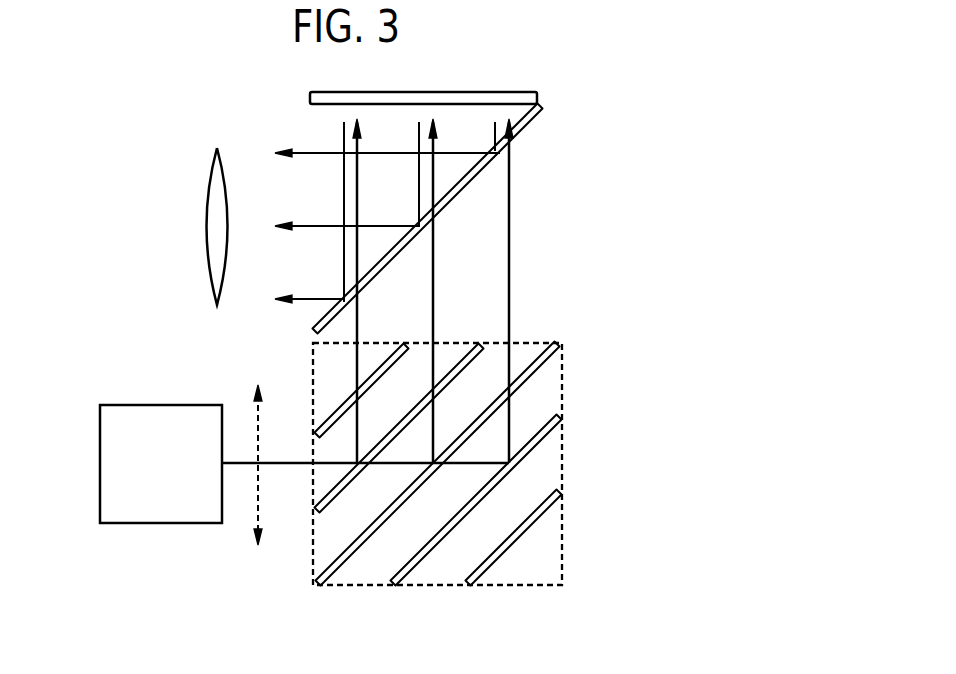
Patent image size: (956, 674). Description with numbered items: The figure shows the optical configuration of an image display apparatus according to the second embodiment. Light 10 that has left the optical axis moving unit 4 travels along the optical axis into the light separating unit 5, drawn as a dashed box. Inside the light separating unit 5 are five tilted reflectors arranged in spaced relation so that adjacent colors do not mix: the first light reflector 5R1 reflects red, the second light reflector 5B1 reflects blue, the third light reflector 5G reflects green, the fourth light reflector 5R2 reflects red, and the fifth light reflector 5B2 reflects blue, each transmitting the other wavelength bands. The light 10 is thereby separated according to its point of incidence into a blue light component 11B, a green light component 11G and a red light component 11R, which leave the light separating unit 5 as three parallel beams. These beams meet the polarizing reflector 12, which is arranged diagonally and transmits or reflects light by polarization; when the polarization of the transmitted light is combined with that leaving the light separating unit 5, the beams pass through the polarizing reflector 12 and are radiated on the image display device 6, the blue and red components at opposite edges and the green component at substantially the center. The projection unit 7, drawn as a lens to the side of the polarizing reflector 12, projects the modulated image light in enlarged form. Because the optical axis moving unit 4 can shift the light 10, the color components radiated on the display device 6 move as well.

The optical axis moving unit 4 is at (100, 466).
The light separating unit 5 is at (535, 343).
The first light reflector 5R1 is at (390, 352).
The second light reflector 5B1 is at (465, 352).
The third light reflector 5G is at (532, 382).
The fourth light reflector 5R2 is at (533, 447).
The fifth light reflector 5B2 is at (540, 513).
The display device 6 is at (310, 98).
The projection unit 7 is at (207, 212).
The light 10 is at (296, 465).
The blue light component 11B is at (356, 355).
The red light component 11R is at (434, 268).
The green light component 11G is at (511, 268).
The polarizing reflector 12 is at (540, 112).